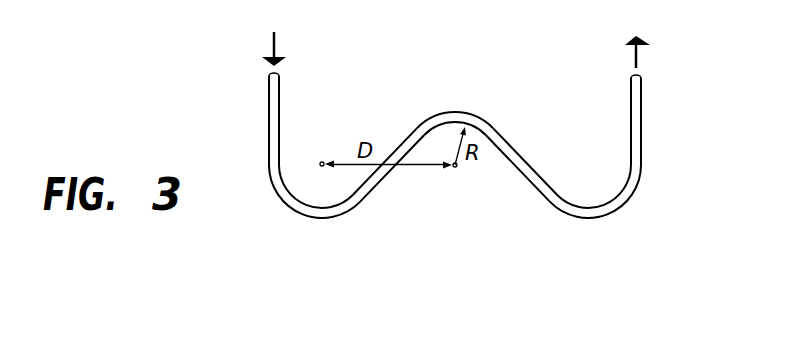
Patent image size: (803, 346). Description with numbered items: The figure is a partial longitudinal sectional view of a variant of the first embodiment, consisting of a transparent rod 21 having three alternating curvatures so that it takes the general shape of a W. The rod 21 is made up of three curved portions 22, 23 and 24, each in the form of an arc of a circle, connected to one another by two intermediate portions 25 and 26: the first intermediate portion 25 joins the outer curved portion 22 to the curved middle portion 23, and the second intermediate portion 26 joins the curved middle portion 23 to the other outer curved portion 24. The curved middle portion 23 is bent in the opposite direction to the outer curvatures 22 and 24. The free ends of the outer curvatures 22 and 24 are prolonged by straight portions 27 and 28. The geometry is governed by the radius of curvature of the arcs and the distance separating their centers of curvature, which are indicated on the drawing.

The transparent rod 21 is at (452, 166).
The curved portion 22 is at (320, 218).
The curved middle portion 23 is at (447, 110).
The curved portion 24 is at (595, 220).
The intermediate portion 25 is at (377, 185).
The intermediate portion 26 is at (511, 166).
The straight portion 27 is at (269, 106).
The straight portion 28 is at (643, 98).